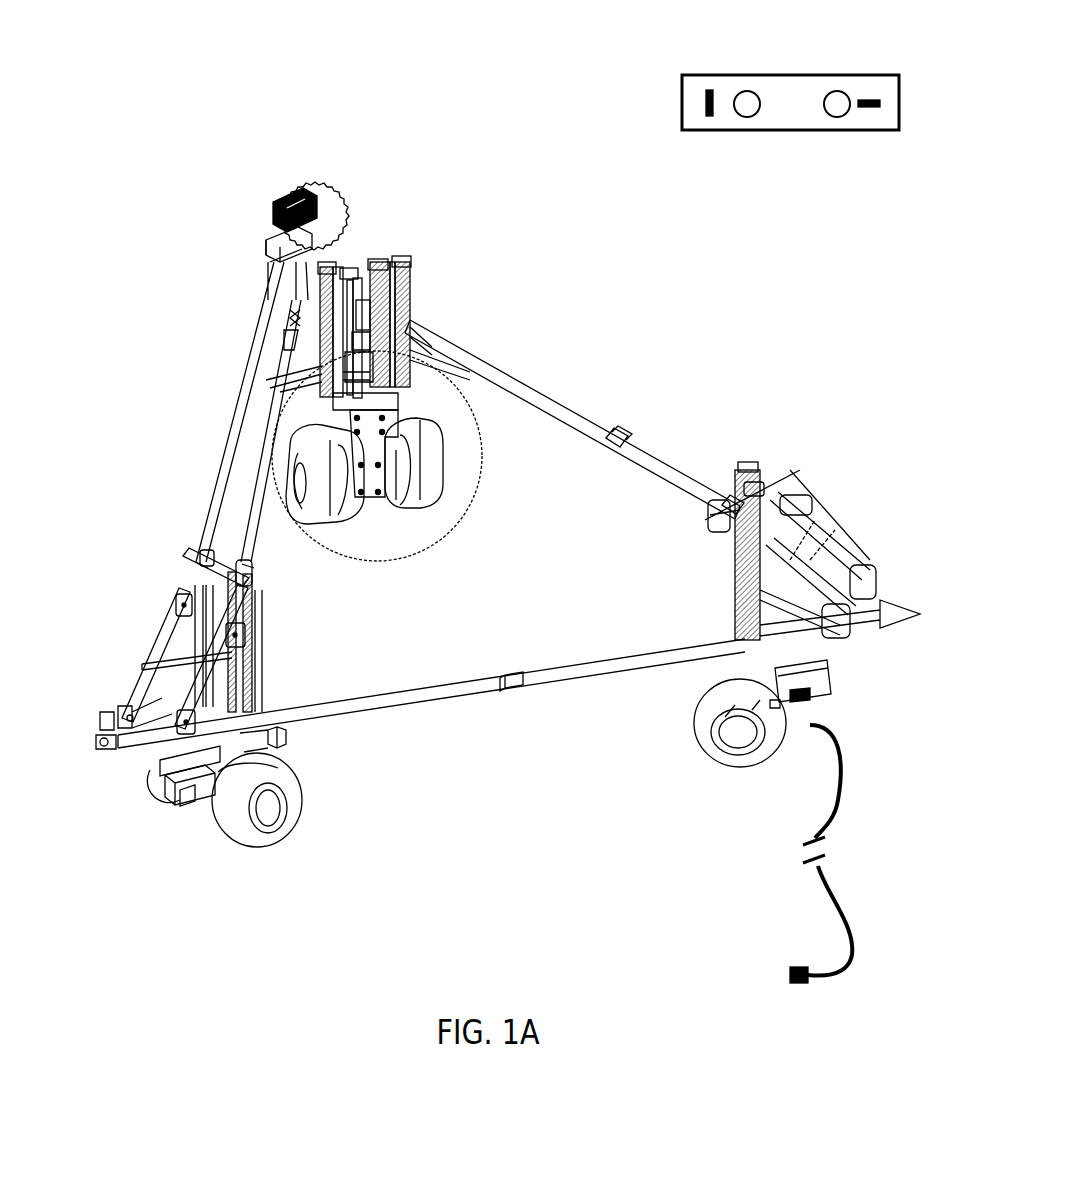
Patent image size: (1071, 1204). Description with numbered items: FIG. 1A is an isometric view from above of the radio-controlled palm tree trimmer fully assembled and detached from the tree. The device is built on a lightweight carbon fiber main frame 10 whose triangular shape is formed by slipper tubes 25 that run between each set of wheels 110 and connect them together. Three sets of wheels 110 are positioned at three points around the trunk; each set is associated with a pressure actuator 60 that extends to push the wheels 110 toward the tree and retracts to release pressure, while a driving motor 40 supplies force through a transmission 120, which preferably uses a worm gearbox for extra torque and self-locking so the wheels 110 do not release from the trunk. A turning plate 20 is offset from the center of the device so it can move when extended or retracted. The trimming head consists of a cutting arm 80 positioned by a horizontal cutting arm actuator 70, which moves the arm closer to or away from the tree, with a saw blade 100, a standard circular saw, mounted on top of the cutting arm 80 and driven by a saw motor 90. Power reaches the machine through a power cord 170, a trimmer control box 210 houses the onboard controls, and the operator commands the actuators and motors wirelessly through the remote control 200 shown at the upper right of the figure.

The main frame 10 is at (822, 565).
The turning plate 20 is at (359, 340).
The slipper tubes 25 is at (563, 425).
The driving motor 40 is at (165, 805).
The pressure actuator 60 is at (170, 692).
The horizontal cutting arm actuator 70 is at (226, 555).
The cutting arm 80 is at (273, 383).
The saw motor 90 is at (278, 252).
The saw blade 100 is at (320, 194).
The wheels 110 is at (255, 835).
The transmission 120 is at (213, 773).
The power cord 170 is at (850, 920).
The remote control 200 is at (790, 87).
The trimmer control box 210 is at (192, 785).